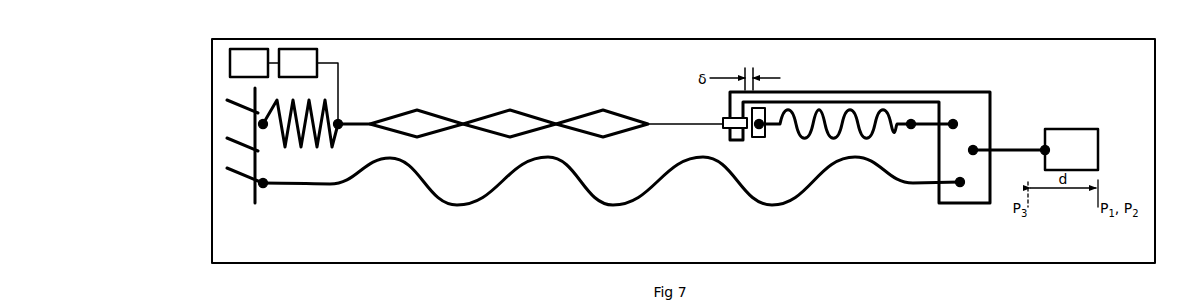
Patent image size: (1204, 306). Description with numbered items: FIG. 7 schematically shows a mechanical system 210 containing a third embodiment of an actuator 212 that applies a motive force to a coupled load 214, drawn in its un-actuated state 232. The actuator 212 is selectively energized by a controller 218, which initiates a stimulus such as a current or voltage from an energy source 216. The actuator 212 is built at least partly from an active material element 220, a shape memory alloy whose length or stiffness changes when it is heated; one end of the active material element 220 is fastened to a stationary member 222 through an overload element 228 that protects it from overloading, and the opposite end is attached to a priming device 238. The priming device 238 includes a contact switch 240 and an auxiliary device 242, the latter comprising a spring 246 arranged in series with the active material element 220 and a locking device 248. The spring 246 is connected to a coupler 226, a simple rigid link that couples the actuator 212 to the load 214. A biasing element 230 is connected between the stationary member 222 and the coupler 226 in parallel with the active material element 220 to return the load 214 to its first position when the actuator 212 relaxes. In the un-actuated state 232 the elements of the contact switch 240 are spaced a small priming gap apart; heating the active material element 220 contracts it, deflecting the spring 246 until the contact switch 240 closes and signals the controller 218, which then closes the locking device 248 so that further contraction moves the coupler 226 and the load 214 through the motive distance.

The mechanical system 210 is at (212, 100).
The actuator 212 is at (382, 98).
The load 214 is at (1034, 149).
The energy source 216 is at (249, 63).
The controller 218 is at (303, 86).
The active material element 220 is at (490, 108).
The stationary member 222 is at (258, 194).
The coupler 226 is at (958, 91).
The overload element 228 is at (284, 142).
The biasing element 230 is at (514, 170).
The un-actuated state 232 is at (203, 173).
The priming device 238 is at (672, 98).
The contact switch 240 is at (767, 112).
The auxiliary device 242 is at (863, 110).
The spring 246 is at (833, 133).
The locking device 248 is at (723, 126).